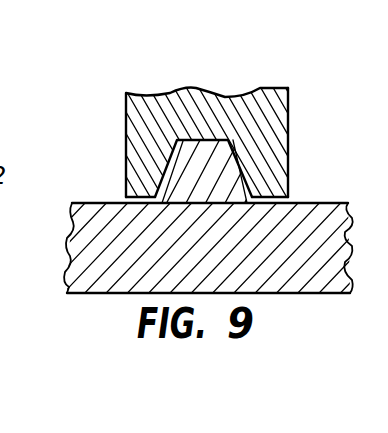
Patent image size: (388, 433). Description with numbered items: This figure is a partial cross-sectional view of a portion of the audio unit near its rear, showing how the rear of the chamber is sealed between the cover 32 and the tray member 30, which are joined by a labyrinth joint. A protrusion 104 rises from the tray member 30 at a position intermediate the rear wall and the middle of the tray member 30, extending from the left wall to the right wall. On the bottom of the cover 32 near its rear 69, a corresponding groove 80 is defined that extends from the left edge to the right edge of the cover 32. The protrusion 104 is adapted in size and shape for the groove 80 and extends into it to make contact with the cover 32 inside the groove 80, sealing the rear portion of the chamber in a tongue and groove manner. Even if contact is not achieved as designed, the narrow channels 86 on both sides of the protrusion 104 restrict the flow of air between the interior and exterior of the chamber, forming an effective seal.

The tray member 30 is at (298, 283).
The cover 32 is at (176, 101).
The rear 69 is at (294, 102).
The groove 80 is at (230, 106).
The narrow channels 86 is at (167, 176).
The protrusion 104 is at (225, 178).